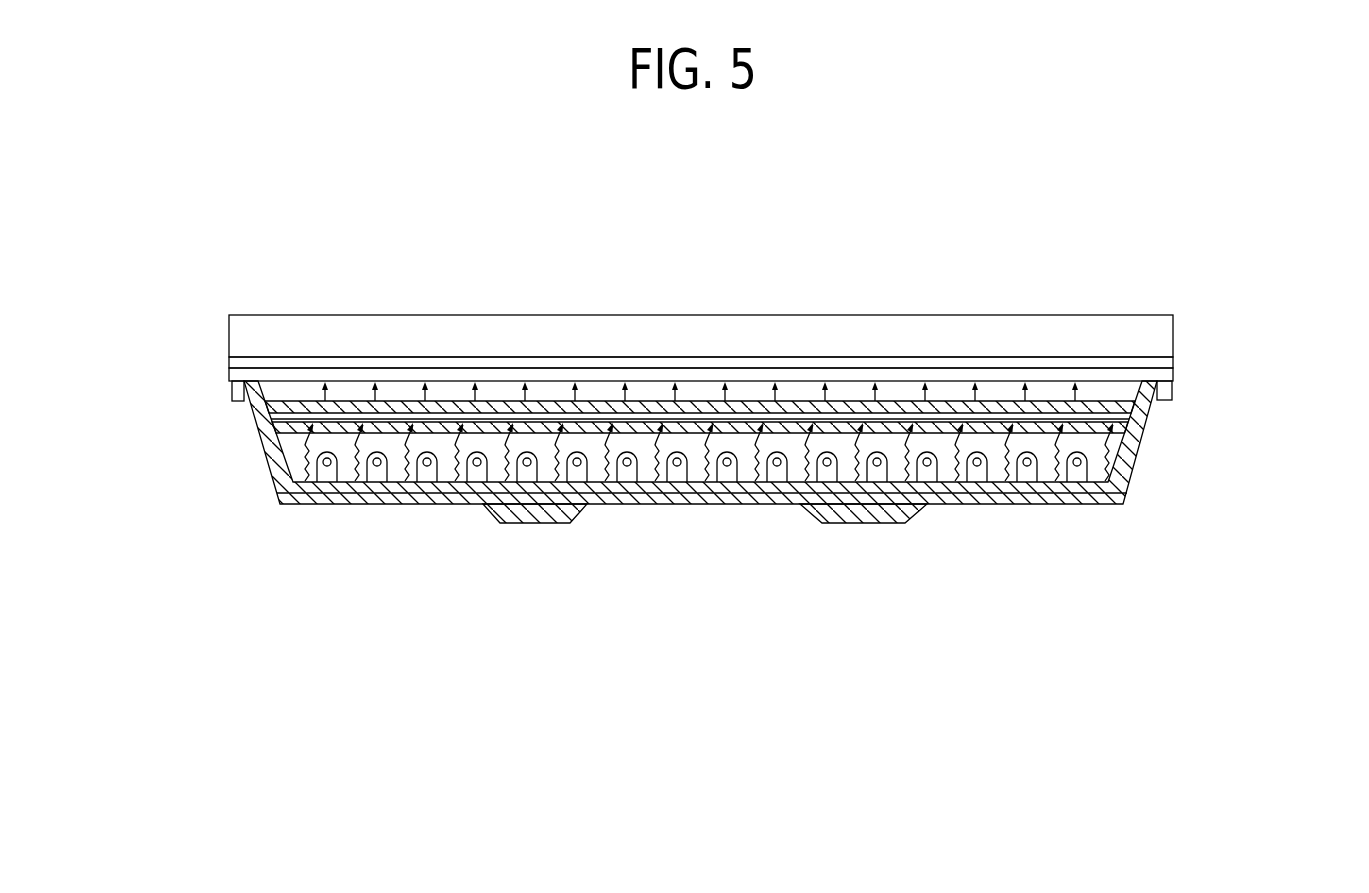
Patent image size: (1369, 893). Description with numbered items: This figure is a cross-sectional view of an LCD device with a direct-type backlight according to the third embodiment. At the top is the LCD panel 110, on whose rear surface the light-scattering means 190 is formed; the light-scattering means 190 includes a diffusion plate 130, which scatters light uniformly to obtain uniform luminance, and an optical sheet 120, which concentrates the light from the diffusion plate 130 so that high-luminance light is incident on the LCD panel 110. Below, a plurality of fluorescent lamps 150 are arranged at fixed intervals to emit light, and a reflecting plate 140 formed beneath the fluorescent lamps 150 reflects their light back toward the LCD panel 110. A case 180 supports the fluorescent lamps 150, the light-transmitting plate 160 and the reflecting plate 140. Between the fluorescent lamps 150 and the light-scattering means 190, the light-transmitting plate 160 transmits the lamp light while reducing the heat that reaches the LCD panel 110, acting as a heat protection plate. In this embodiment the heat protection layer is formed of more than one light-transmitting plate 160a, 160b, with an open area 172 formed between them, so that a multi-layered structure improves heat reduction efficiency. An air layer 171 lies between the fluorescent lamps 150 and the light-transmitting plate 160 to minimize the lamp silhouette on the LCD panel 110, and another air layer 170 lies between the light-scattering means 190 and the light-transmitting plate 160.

The LCD panel 110 is at (1163, 333).
The optical sheet 120 is at (1165, 362).
The diffusion plate 130 is at (1170, 380).
The light-scattering means 190 is at (1268, 350).
The reflecting plate 140 is at (1125, 445).
The case 180 is at (1120, 487).
The fluorescent lamps 150 is at (1075, 483).
The light-transmitting plate 160 is at (581, 413).
The light-transmitting plate 160a is at (282, 407).
The light-transmitting plate 160b is at (288, 428).
The air layer 170 is at (1050, 392).
The air layer 171 is at (1090, 448).
The open area 172 is at (895, 419).